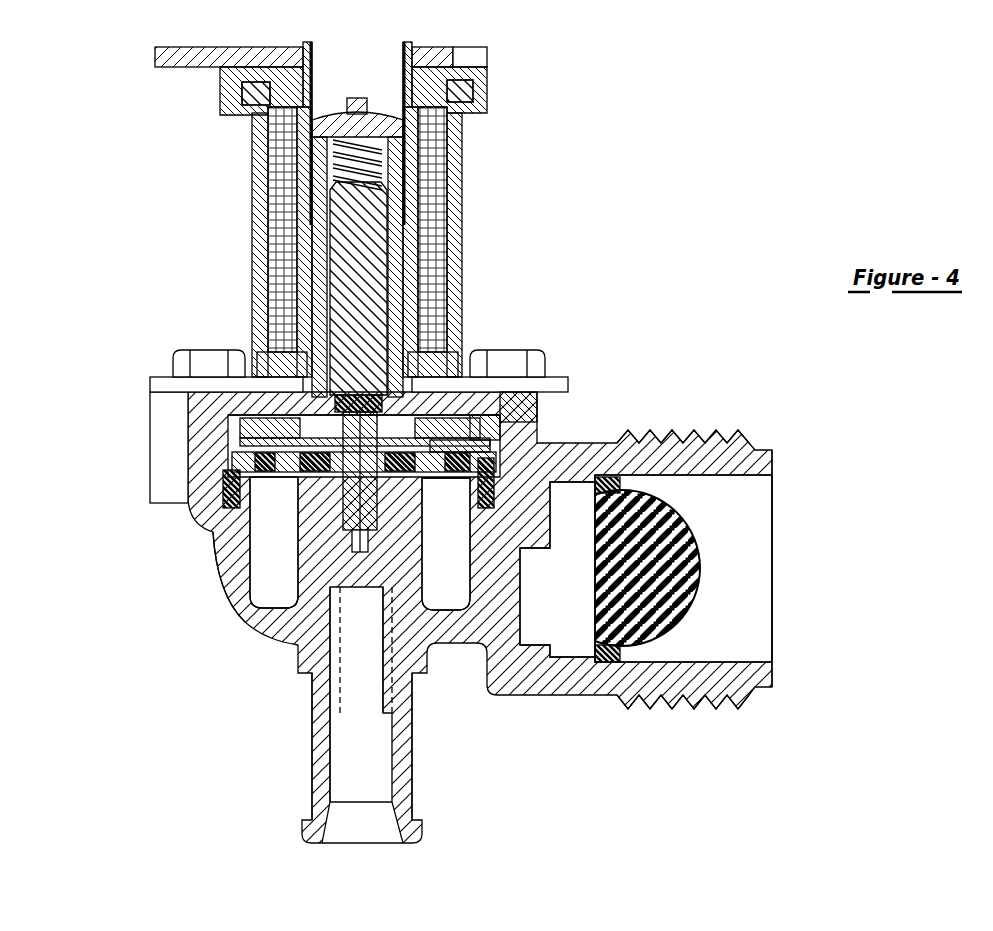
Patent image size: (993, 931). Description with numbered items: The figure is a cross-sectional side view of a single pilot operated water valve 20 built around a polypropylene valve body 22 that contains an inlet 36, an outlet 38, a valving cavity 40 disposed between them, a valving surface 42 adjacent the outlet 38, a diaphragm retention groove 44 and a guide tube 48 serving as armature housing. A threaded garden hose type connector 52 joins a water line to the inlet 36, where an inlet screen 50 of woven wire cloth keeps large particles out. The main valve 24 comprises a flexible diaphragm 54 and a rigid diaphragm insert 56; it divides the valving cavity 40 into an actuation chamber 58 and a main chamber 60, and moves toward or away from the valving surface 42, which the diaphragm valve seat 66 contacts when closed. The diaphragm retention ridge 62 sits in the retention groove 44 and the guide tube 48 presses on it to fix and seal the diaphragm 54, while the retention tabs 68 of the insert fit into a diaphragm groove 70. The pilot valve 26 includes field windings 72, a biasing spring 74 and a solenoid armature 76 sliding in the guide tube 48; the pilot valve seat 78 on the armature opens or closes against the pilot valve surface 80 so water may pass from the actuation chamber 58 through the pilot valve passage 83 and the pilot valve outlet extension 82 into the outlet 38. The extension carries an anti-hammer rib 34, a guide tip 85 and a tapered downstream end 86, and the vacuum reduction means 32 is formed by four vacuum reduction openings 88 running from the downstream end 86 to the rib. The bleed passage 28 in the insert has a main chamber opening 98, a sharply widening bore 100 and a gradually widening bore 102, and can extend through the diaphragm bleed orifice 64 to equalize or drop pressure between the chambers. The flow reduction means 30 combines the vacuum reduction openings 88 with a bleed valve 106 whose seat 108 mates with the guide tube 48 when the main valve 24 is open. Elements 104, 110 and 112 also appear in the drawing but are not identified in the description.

The pilot operated valve 20 is at (420, 35).
The valve body 22 is at (620, 452).
The main valve 24 is at (188, 545).
The pilot valve 26 is at (505, 251).
The bleed passage 28 is at (293, 431).
The flow reduction means 30 is at (199, 565).
The vacuum reduction opening 32 is at (362, 591).
The anti-hammer rib 34 is at (340, 480).
The inlet 36 is at (714, 552).
The outlet 38 is at (328, 853).
The valving cavity 40 is at (300, 663).
The valving surface 42 is at (292, 535).
The diaphragm retention groove 44 is at (483, 508).
The guide tube 48 is at (372, 225).
The inlet screen 50 is at (703, 573).
The threaded garden hose type connector 52 is at (710, 430).
The diaphragm 54 is at (442, 432).
The diaphragm insert 56 is at (423, 457).
The actuation chamber 58 is at (483, 390).
The main chamber 60 is at (450, 590).
The retention ridge 62 is at (540, 505).
The diaphragm bleed orifice 64 is at (270, 476).
The diaphragm valve seat 66 is at (262, 542).
The retention tabs 68 is at (500, 425).
The diaphragm groove 70 is at (472, 437).
The field windings 72 is at (437, 150).
The biasing spring 74 is at (333, 147).
The solenoid armature 76 is at (365, 195).
The pilot valve seat 78 is at (420, 258).
The pilot valve surface 80 is at (432, 340).
The pilot valve outlet extension 82 is at (403, 545).
The pilot valve passage 83 is at (307, 337).
The guide tip 85 is at (360, 545).
The downstream end 86 is at (318, 632).
The vacuum reduction opening 88 is at (315, 628).
The main chamber opening 98 is at (285, 470).
The sharply widening bore 100 is at (290, 463).
The gradually widening bore 102 is at (290, 450).
The mounting nut 104 is at (237, 412).
The bleed valve 106 is at (283, 430).
The seat 108 is at (283, 423).
The mounting plate 110 is at (250, 387).
The seal pad 112 is at (397, 398).